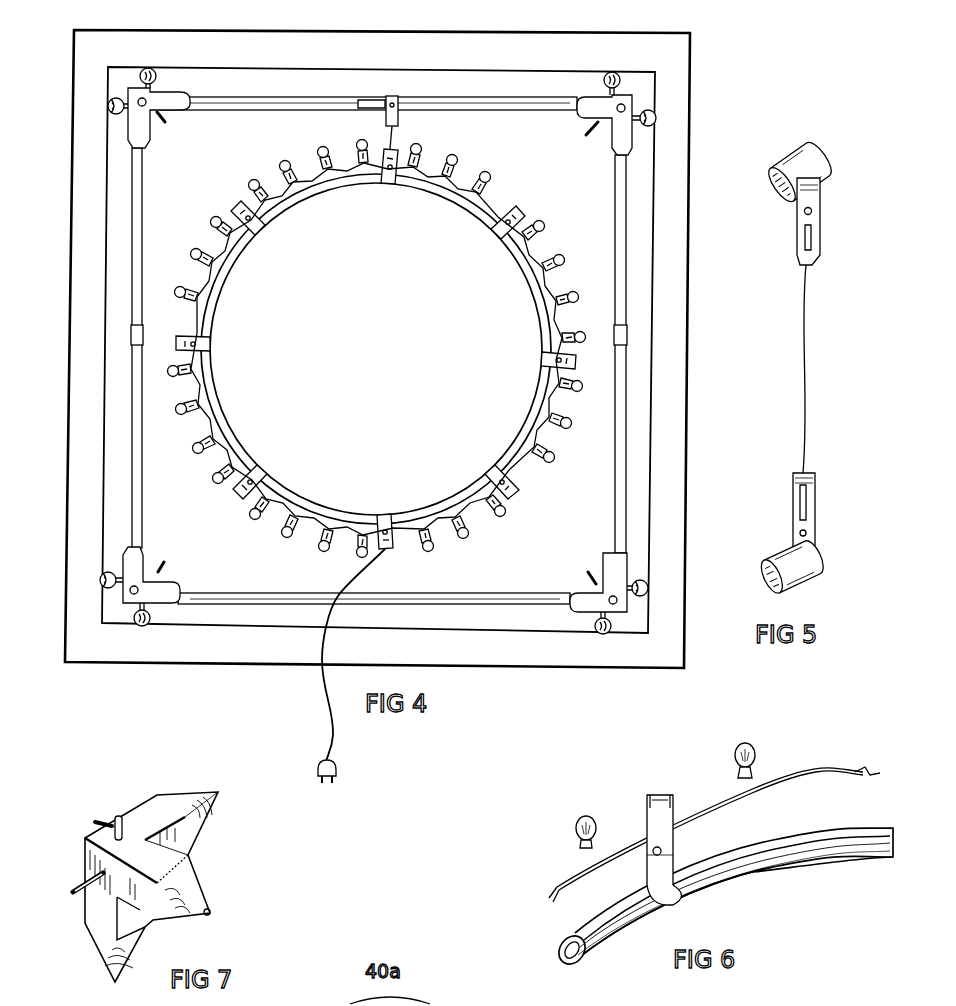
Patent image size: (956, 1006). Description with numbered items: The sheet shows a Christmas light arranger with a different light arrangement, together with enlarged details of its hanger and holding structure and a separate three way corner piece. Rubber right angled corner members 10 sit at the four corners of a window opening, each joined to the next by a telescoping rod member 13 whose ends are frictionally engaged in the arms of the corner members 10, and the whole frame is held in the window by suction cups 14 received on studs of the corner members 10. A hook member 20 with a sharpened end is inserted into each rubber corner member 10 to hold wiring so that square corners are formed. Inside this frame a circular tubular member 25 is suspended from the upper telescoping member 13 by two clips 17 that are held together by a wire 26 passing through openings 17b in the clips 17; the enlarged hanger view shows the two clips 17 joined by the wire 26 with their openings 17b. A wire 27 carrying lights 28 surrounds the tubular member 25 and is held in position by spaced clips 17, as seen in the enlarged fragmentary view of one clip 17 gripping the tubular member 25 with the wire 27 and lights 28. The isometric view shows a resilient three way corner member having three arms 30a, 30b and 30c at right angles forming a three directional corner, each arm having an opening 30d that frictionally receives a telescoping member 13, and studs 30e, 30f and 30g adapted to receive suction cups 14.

In FIG. 4, the corner member 10 is at (134, 558).
In FIG. 4, the telescoping rod member 13 is at (250, 105).
In FIG. 4, the suction cup 14 is at (600, 80).
In FIG. 4, the clip 17 is at (399, 113).
In FIG. 5, the clip 17 is at (820, 190).
In FIG. 6, the clip 17 is at (675, 848).
In FIG. 5, the opening 17b is at (803, 212).
In FIG. 4, the hook member 20 is at (157, 125).
In FIG. 4, the circular tubular member 25 is at (373, 528).
In FIG. 6, the circular tubular member 25 is at (715, 872).
In FIG. 4, the wire 26 is at (387, 148).
In FIG. 5, the wire 26 is at (806, 340).
In FIG. 4, the wire 27 is at (540, 258).
In FIG. 6, the wire 27 is at (780, 782).
In FIG. 4, the light 28 is at (560, 272).
In FIG. 6, the light 28 is at (581, 820).
In FIG. 7, the arm 30a is at (185, 800).
In FIG. 7, the arm 30b is at (128, 940).
In FIG. 7, the arm 30c is at (195, 896).
In FIG. 7, the opening 30d is at (212, 915).
In FIG. 7, the stud 30e is at (121, 815).
In FIG. 7, the stud 30f is at (100, 820).
In FIG. 7, the stud 30g is at (72, 890).